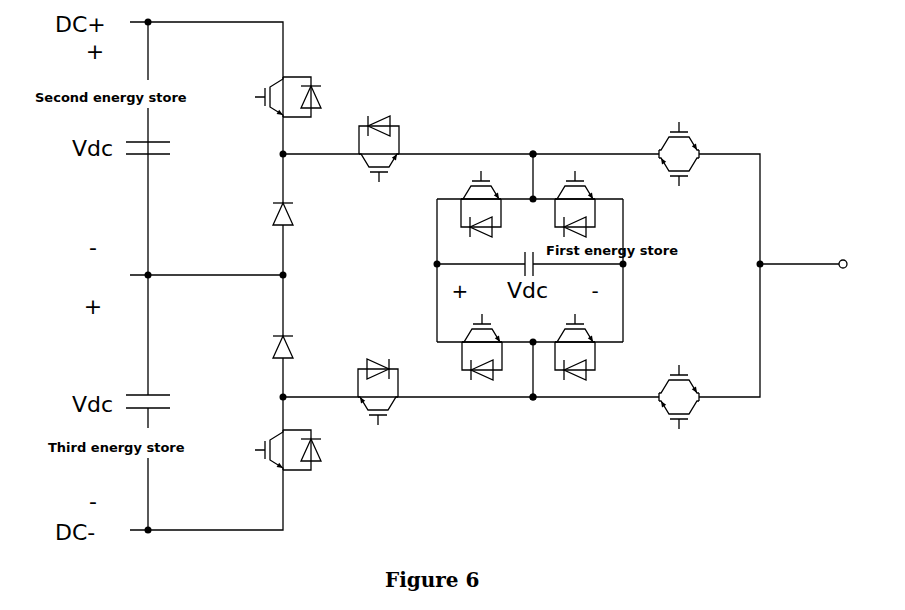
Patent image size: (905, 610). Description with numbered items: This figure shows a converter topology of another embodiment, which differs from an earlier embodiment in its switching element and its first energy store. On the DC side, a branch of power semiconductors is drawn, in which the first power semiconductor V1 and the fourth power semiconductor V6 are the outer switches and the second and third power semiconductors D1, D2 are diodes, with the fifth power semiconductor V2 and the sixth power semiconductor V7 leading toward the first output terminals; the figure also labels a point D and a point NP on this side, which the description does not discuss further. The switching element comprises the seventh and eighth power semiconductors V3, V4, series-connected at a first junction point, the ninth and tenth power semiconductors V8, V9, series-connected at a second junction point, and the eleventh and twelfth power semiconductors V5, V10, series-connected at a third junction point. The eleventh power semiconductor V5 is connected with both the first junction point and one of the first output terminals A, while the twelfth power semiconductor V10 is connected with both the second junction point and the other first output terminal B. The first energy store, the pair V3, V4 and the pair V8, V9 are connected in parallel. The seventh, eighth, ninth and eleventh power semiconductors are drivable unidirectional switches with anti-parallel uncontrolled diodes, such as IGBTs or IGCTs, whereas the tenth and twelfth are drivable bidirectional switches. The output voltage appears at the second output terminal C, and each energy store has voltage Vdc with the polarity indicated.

The first power semiconductor V1 is at (270, 97).
The fifth power semiconductor V2 is at (379, 166).
The seventh power semiconductor V3 is at (469, 202).
The eighth power semiconductor V4 is at (588, 202).
The eleventh power semiconductor V5 is at (679, 168).
The fourth power semiconductor V6 is at (270, 450).
The sixth power semiconductor V7 is at (378, 375).
The ninth power semiconductor V8 is at (465, 348).
The tenth power semiconductor V9 is at (593, 348).
The twelfth power semiconductor V10 is at (680, 380).
The second power semiconductor D1 is at (259, 212).
The third power semiconductor D2 is at (256, 346).
The first output terminal A is at (532, 138).
The first output terminal B is at (533, 413).
The second output terminal C is at (795, 246).
The node D is at (225, 259).
The neutral point NP is at (112, 277).